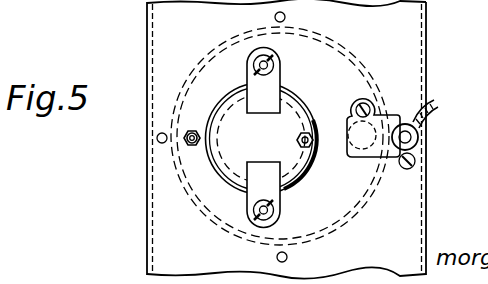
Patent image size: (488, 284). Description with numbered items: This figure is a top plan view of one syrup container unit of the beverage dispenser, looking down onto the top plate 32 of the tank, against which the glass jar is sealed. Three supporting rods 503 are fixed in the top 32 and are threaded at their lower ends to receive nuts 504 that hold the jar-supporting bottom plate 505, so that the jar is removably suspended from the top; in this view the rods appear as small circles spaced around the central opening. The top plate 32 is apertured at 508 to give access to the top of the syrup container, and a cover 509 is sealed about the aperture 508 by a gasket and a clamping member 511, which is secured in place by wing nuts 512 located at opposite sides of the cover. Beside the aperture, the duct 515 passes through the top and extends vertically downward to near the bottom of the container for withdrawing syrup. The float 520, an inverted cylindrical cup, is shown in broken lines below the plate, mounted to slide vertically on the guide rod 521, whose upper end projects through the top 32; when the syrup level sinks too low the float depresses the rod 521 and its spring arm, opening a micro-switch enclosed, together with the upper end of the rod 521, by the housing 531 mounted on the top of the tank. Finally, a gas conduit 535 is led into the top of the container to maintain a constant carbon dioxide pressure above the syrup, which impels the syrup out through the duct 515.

The top plate 32 is at (413, 22).
The supporting rods 503 is at (275, 16).
The nuts 504 is at (14, 16).
The bottom plate 505 is at (98, 4).
The aperture 508 is at (305, 95).
The cover 509 is at (232, 154).
The clamping member 511 is at (272, 82).
The wing nuts 512 is at (274, 63).
The duct 515 is at (315, 133).
The float 520 is at (358, 152).
The guide rod 521 is at (352, 153).
The housing 531 is at (432, 104).
The gas conduit 535 is at (188, 143).